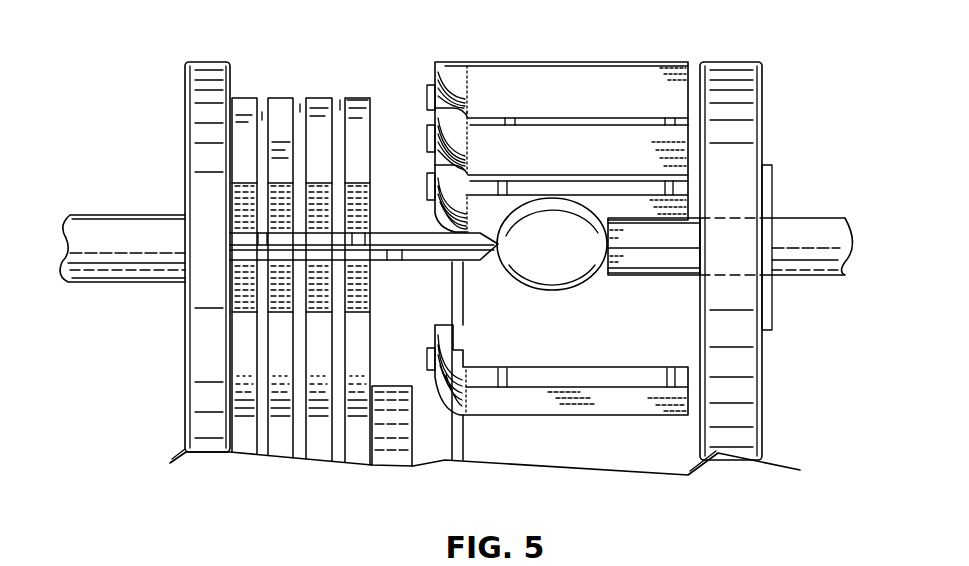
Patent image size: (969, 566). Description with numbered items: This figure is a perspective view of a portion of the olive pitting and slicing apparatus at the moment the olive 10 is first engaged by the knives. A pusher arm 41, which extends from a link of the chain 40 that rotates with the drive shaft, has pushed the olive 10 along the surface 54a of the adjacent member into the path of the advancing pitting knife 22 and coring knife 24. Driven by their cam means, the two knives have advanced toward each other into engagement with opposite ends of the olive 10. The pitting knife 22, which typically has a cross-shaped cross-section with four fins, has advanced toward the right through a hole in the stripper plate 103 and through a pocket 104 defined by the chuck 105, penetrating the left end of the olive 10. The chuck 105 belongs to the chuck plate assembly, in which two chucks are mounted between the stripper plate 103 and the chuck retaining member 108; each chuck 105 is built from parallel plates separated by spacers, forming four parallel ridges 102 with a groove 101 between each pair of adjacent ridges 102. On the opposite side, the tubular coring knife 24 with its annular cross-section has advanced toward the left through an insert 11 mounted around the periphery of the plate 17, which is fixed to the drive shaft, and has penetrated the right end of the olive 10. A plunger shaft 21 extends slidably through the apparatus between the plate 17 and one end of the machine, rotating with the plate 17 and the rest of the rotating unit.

The olive 10 is at (533, 270).
The insert 11 is at (770, 183).
The plate 17 is at (753, 362).
The plunger shaft 21 is at (132, 228).
The pitting knife 22 is at (428, 260).
The coring knife 24 is at (656, 258).
The chain 40 is at (457, 450).
The pusher arm 41 is at (617, 143).
The surface of member 54 54a is at (593, 350).
The groove 101 is at (340, 102).
The ridge 102 is at (358, 450).
The stripper plate 103 is at (210, 427).
The pocket 104 is at (360, 312).
The chuck 105 is at (355, 92).
The chuck retaining member 108 is at (393, 430).